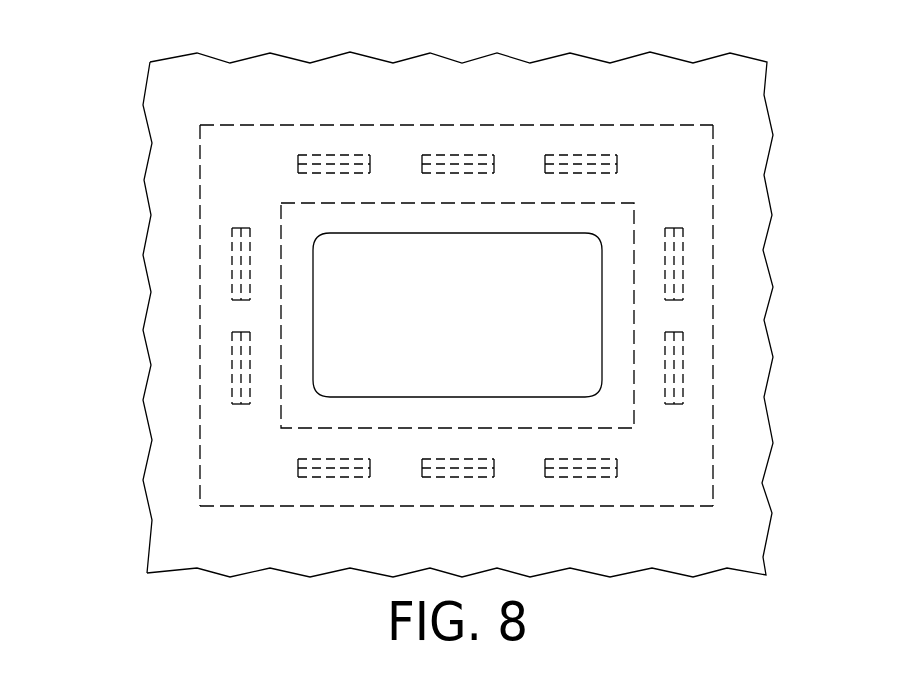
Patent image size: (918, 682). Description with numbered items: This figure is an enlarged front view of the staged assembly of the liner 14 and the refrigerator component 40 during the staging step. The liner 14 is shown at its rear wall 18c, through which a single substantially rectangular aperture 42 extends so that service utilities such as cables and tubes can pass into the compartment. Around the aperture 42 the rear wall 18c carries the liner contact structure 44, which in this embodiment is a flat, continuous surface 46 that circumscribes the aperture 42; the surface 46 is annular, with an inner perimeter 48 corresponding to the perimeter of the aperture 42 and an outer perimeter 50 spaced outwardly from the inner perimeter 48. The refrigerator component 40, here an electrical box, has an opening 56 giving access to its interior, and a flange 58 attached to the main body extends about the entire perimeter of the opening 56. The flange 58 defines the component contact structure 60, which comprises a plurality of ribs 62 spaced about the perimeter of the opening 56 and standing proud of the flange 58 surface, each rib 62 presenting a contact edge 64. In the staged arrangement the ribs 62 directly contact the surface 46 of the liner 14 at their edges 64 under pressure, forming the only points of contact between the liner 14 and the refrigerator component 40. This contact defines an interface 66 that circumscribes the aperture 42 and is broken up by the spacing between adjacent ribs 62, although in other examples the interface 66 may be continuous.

The liner 14 is at (750, 232).
The rear wall 18c is at (178, 95).
The refrigerator component 40 is at (200, 162).
The aperture 42 is at (489, 376).
The liner contact structure 44 is at (214, 433).
The surface 46 is at (457, 315).
The inner perimeter 48 is at (313, 312).
The outer perimeter 50 is at (397, 124).
The opening 56 is at (522, 247).
The flange 58 is at (714, 450).
The component contact structure 60 is at (304, 128).
The ribs 62 is at (335, 153).
The contact edge 64 is at (352, 164).
The interface 66 is at (603, 143).